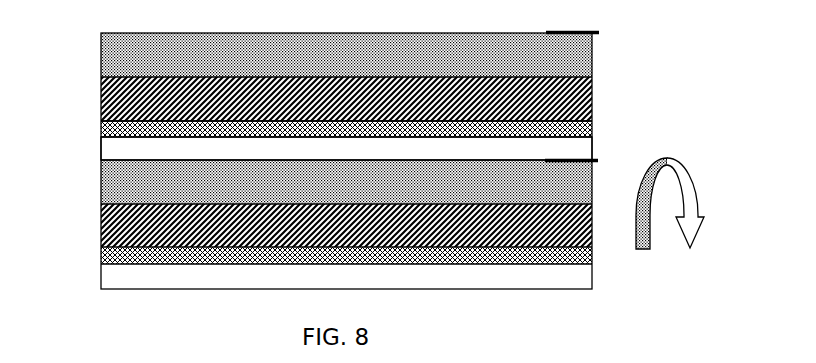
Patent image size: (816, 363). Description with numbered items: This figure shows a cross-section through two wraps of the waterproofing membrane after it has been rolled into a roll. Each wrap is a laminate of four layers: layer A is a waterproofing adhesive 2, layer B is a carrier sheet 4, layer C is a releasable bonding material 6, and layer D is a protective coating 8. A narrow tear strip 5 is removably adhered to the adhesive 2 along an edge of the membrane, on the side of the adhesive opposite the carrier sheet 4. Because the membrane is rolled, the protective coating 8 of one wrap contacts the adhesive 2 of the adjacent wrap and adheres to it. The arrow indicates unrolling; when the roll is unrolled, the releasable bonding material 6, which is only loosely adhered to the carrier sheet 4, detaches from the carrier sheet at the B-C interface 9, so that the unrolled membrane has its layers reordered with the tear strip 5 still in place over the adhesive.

The waterproofing adhesive 2 is at (101, 182).
The carrier sheet 4 is at (101, 225).
The tear strip 5 is at (599, 32).
The releasable bonding material 6 is at (101, 128).
The protective coating 8 is at (101, 149).
The B-C interface 9 is at (592, 120).